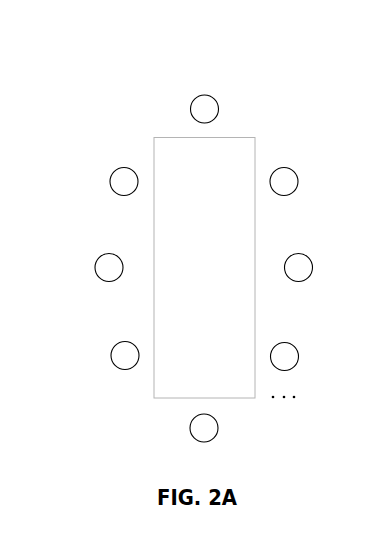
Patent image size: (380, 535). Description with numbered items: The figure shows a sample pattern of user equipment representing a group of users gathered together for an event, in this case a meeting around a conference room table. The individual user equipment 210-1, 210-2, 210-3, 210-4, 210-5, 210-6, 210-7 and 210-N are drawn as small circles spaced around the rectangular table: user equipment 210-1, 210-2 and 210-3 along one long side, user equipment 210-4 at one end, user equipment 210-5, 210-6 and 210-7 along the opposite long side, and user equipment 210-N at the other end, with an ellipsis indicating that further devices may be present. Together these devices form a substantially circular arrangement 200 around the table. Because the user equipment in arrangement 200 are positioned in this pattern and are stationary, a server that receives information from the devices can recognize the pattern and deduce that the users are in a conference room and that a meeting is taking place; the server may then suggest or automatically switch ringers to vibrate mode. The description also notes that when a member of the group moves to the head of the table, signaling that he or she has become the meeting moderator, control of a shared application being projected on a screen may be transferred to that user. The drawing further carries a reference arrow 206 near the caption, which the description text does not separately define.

The substantially circular arrangement 200 is at (170, 55).
The direction indicator / reference to next figure 206 is at (368, 518).
The user equipment 210-1 is at (100, 356).
The user equipment 210-2 is at (84, 268).
The user equipment 210-3 is at (100, 182).
The user equipment 210-4 is at (178, 109).
The user equipment 210-5 is at (310, 182).
The user equipment 210-6 is at (324, 268).
The user equipment 210-7 is at (313, 352).
The user equipment 210-N is at (204, 440).